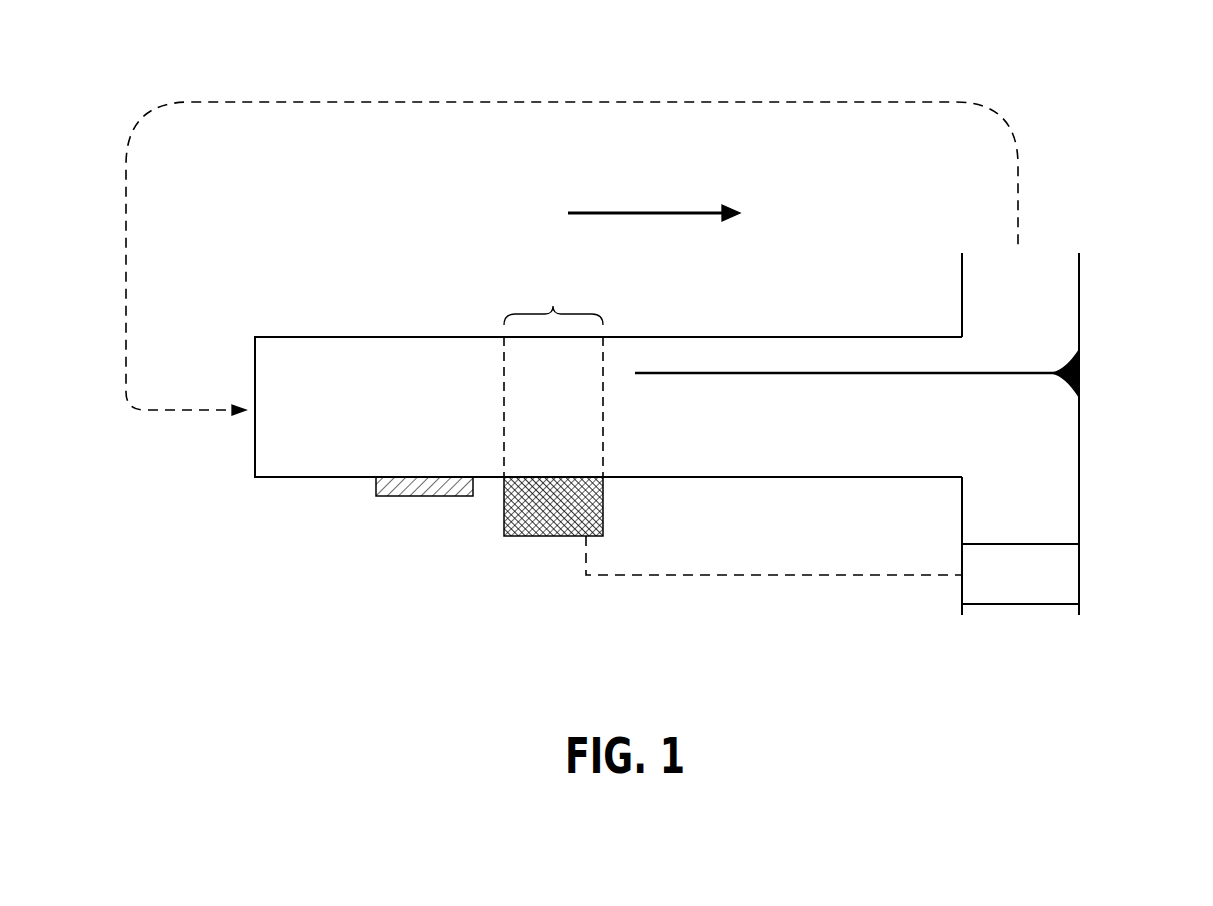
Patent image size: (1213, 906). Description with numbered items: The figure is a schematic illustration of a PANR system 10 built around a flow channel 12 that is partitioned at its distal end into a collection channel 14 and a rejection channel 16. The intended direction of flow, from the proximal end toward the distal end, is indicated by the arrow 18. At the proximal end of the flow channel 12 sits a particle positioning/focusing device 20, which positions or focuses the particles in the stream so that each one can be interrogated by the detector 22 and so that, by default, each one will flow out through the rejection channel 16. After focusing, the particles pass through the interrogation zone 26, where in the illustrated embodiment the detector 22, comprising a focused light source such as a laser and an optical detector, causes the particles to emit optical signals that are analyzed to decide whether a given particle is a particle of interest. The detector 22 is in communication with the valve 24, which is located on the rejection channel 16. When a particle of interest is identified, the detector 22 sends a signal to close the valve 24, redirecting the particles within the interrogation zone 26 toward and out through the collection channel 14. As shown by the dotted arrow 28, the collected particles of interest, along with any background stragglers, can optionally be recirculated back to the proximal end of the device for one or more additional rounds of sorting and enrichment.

The PANR system 10 is at (370, 206).
The flow channel 12 is at (625, 337).
The collection channel 14 is at (1044, 248).
The rejection channel 16 is at (1043, 625).
The arrow 18 is at (655, 213).
The particle positioning/focusing device 20 is at (375, 483).
The detector 22 is at (503, 527).
The valve 24 is at (1068, 575).
The interrogation zone 26 is at (553, 376).
The dotted arrow 28 is at (978, 112).